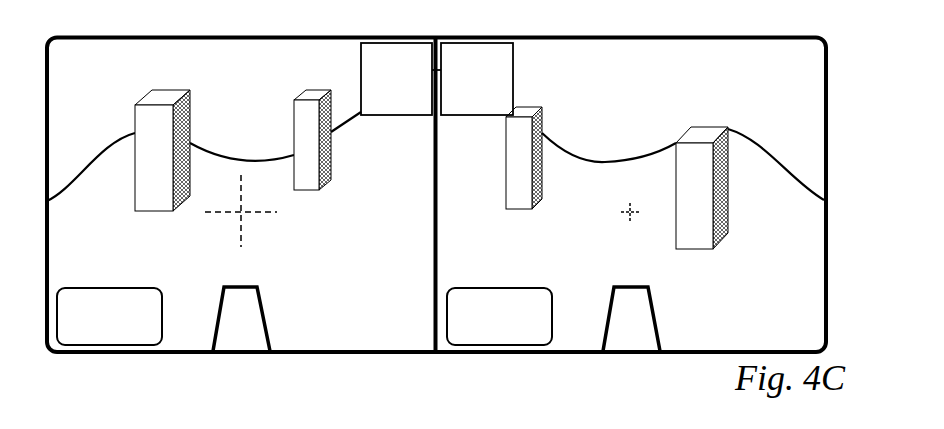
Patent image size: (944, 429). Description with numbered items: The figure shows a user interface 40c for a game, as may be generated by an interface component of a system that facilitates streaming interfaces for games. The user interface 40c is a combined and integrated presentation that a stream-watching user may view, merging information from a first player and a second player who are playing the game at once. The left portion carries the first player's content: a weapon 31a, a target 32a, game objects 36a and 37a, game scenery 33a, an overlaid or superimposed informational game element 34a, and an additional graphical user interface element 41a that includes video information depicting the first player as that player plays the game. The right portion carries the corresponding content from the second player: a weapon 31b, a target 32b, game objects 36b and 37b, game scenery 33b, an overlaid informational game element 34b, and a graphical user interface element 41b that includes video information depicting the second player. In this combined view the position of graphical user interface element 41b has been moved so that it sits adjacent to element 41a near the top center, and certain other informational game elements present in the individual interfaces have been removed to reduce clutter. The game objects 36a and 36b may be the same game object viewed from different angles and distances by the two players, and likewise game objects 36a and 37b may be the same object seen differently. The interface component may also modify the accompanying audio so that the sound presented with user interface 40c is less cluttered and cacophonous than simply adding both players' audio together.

The user interface 40c is at (436, 181).
The graphical user interface element 41a is at (401, 79).
The graphical user interface element 41b is at (477, 79).
The game scenery 33a is at (204, 166).
The game scenery 33b is at (683, 180).
The game object 36a is at (162, 162).
The game object 36b is at (524, 169).
The game object 37a is at (315, 153).
The game object 37b is at (702, 200).
The target 32a is at (242, 211).
The target 32b is at (644, 220).
The informational game element 34a is at (109, 316).
The informational game element 34b is at (499, 316).
The weapon 31a is at (241, 319).
The weapon 31b is at (631, 319).